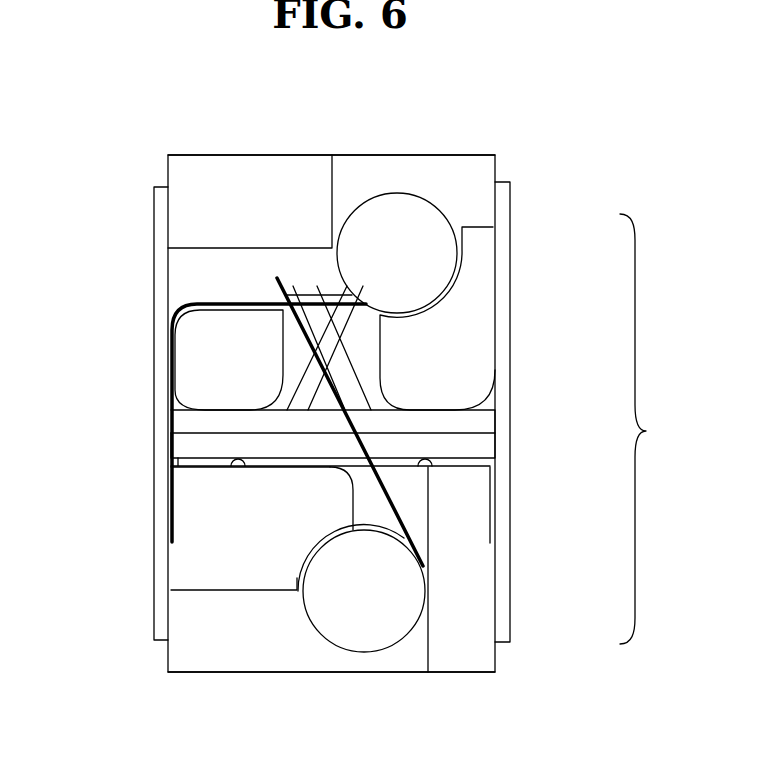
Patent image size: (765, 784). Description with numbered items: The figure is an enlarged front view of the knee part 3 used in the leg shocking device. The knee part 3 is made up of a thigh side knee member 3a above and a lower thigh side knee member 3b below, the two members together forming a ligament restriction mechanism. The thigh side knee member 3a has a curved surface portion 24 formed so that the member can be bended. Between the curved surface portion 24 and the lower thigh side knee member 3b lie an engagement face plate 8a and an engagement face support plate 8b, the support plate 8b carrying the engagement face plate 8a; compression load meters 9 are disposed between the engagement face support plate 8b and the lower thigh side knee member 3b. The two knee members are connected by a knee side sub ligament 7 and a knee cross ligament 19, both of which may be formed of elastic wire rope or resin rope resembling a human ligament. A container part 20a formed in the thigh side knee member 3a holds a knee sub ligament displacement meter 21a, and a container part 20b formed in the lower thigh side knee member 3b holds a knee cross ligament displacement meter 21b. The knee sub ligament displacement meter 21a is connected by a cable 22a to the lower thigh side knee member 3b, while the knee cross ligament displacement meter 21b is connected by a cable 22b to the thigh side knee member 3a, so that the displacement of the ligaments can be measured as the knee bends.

The knee part 3 is at (645, 429).
The thigh side knee member 3a is at (352, 155).
The lower thigh side knee member 3b is at (282, 673).
The knee side sub ligament 7 is at (160, 255).
The engagement face plate 8a is at (483, 425).
The engagement face support plate 8b is at (480, 448).
The compression load meters 9 is at (438, 468).
The knee cross ligament 19 is at (348, 328).
The container part 20a is at (452, 177).
The container part 20b is at (395, 662).
The knee sub ligament displacement meter 21a is at (408, 225).
The knee cross ligament displacement meter 21b is at (405, 592).
The cable 22a is at (190, 302).
The cable 22b is at (407, 535).
The curved surface portion 24 is at (207, 352).